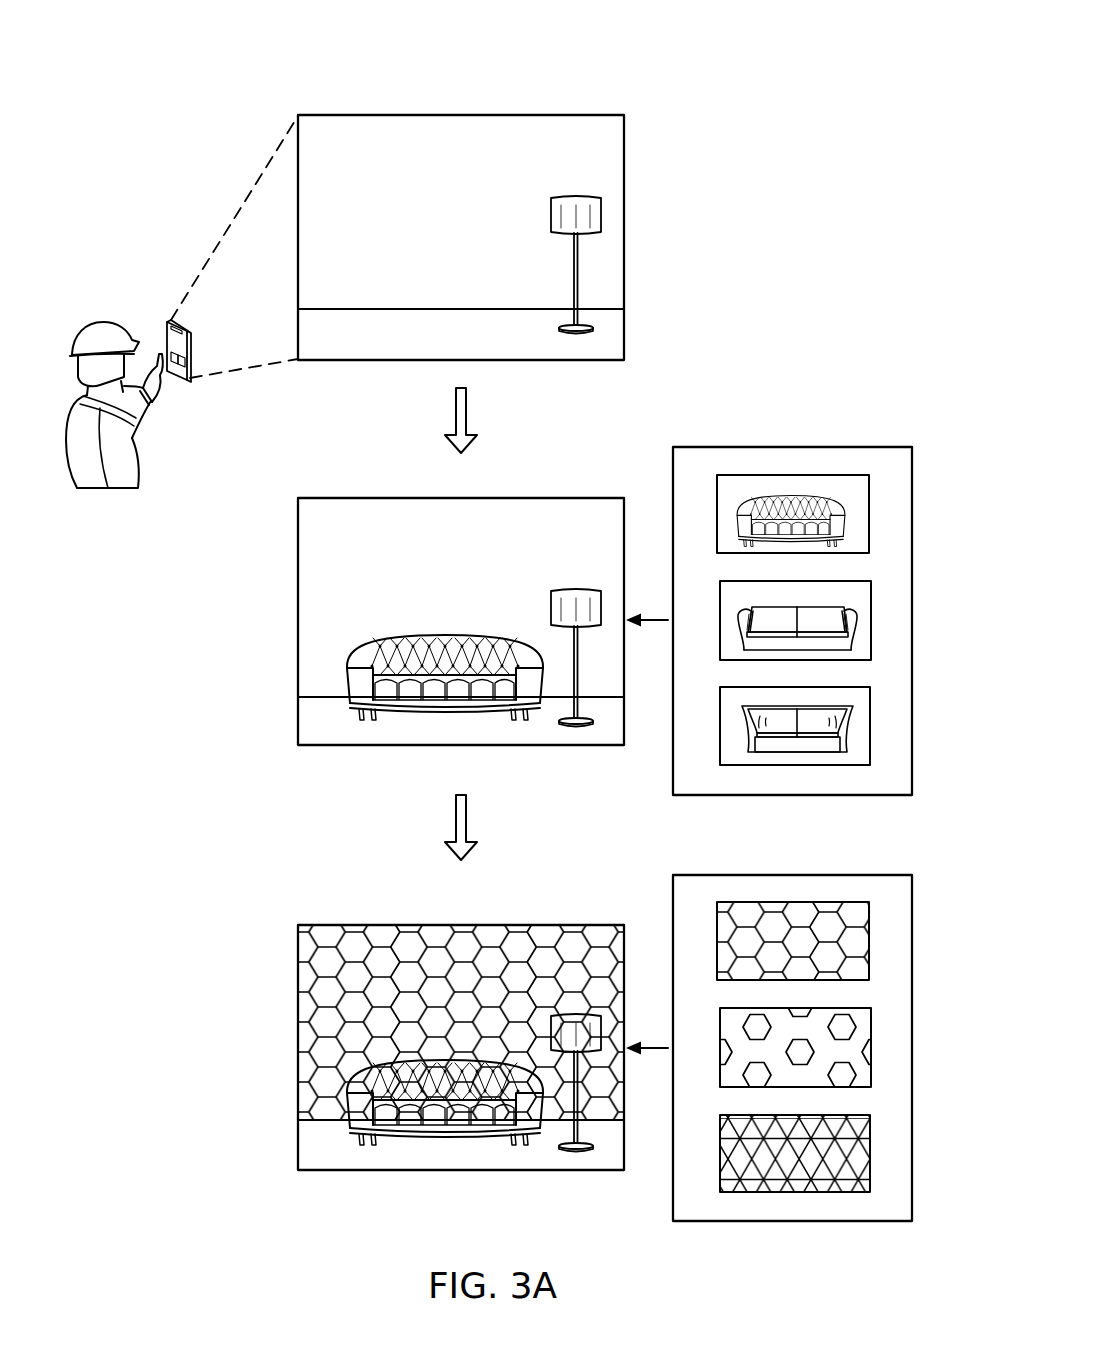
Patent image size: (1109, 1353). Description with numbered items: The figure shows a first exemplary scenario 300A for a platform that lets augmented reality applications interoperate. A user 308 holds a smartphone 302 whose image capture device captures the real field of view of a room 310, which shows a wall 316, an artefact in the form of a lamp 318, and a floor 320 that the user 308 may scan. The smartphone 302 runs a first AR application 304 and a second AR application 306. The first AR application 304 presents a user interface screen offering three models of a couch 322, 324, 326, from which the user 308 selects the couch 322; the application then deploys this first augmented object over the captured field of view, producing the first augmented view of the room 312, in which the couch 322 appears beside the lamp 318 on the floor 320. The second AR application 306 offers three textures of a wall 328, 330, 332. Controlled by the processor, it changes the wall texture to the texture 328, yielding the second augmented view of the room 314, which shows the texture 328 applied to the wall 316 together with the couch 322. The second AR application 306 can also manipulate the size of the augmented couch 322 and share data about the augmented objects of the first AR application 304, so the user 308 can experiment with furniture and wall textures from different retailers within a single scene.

The augmented reality furniture visualization process 300A is at (223, 60).
The smartphone 302 is at (195, 357).
The first AR application 304 is at (173, 372).
The second AR application 306 is at (193, 365).
The user 308 is at (100, 318).
The real field of view of a room 310 is at (463, 113).
The first augmented view of the room 312 is at (298, 623).
The second augmented view of the room 314 is at (298, 1050).
The wall 316 is at (611, 148).
The artefact (lamp) 318 is at (605, 215).
The floor 320 is at (608, 338).
The first augmented object (couch) 322 is at (347, 662).
The couch model 324 is at (874, 619).
The couch model 326 is at (874, 723).
The wall texture 328 is at (488, 957).
The wall texture 330 is at (872, 1045).
The wall texture 332 is at (872, 1152).